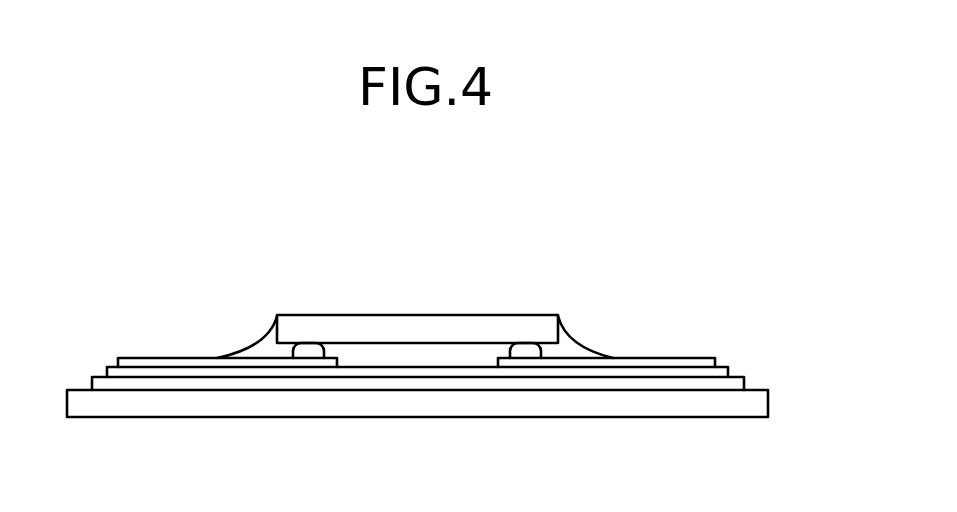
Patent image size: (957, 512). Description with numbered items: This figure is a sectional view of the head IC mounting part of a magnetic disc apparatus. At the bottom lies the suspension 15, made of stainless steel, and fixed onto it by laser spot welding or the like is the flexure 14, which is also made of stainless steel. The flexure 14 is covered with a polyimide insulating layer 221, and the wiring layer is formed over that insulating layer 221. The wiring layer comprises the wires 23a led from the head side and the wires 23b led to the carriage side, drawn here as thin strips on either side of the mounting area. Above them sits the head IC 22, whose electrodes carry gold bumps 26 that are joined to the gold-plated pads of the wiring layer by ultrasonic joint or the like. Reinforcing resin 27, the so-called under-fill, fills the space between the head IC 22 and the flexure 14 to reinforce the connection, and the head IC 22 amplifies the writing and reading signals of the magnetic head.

The flexure 14 is at (735, 385).
The suspension 15 is at (733, 400).
The head IC 22 is at (432, 327).
The wires led from the head side 23a is at (187, 358).
The wires led to the carriage side 23b is at (702, 360).
The gold bumps 26 is at (525, 350).
The reinforcing resin 27 is at (573, 337).
The polyimide insulating layer 221 is at (718, 366).